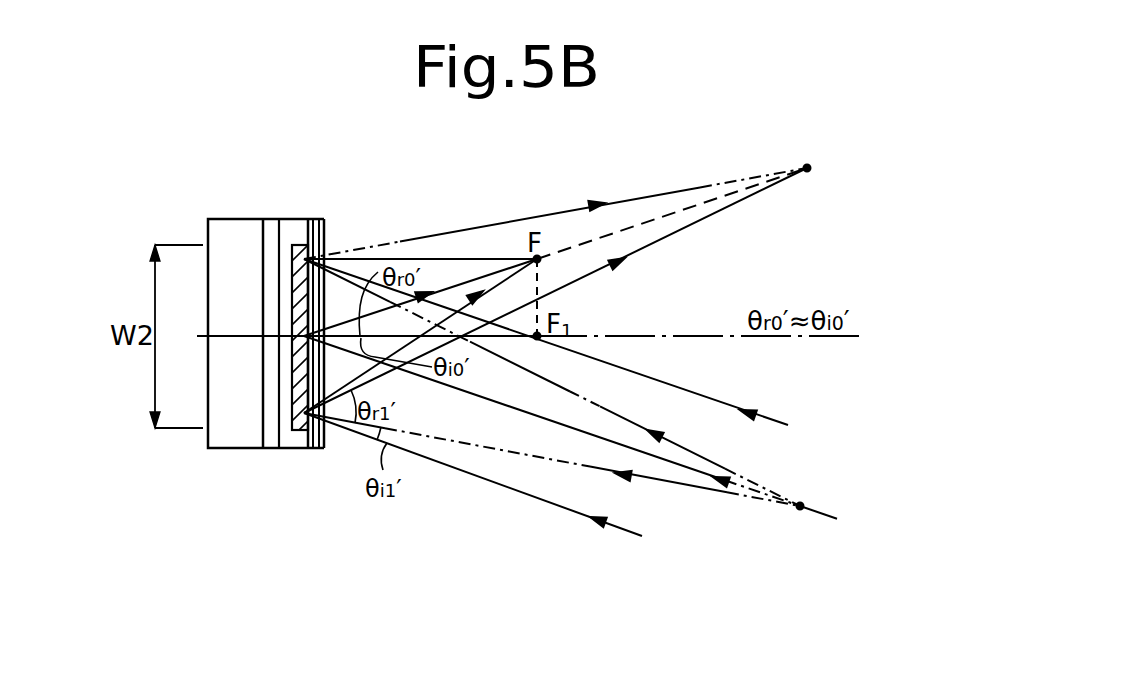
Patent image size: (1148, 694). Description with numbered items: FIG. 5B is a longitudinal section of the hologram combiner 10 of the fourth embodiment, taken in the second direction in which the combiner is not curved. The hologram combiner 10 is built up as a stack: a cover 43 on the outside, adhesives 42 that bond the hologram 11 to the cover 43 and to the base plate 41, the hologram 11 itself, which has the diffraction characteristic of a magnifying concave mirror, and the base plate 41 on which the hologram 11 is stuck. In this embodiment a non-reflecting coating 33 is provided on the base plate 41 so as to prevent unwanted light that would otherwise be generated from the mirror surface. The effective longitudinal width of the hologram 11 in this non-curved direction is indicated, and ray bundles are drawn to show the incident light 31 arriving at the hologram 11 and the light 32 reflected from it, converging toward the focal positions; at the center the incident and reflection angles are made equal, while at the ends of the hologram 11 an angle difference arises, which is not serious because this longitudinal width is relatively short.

The hologram combiner 10 is at (230, 198).
The hologram 11 is at (297, 244).
The incident light 31 is at (518, 385).
The reflected light 32 is at (474, 292).
The non-reflecting coating 33 is at (325, 230).
The base plate 41 is at (313, 448).
The adhesives 42 is at (292, 438).
The cover 43 is at (233, 440).